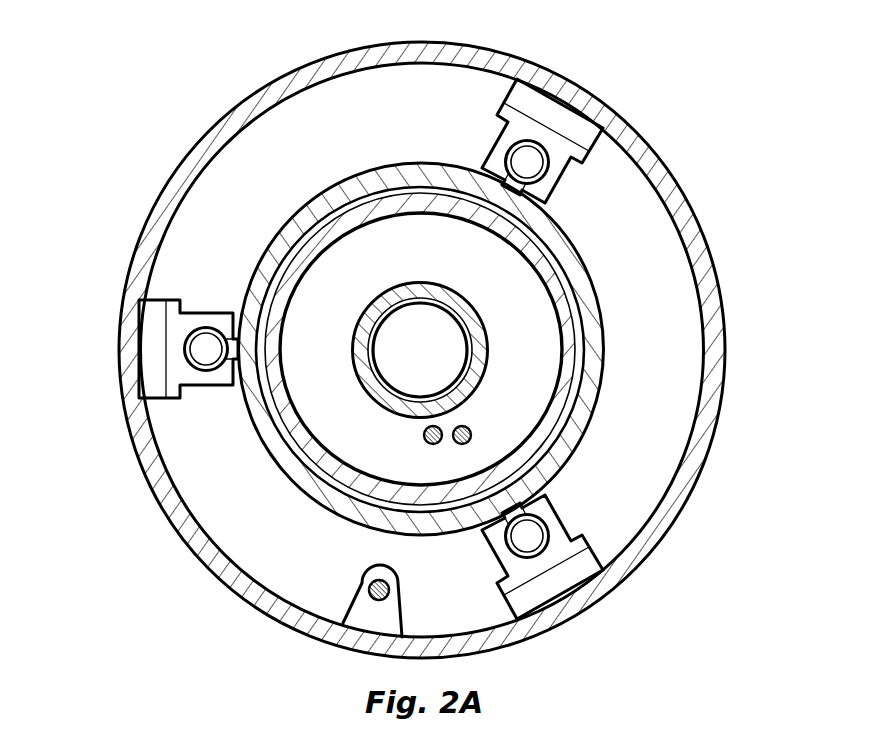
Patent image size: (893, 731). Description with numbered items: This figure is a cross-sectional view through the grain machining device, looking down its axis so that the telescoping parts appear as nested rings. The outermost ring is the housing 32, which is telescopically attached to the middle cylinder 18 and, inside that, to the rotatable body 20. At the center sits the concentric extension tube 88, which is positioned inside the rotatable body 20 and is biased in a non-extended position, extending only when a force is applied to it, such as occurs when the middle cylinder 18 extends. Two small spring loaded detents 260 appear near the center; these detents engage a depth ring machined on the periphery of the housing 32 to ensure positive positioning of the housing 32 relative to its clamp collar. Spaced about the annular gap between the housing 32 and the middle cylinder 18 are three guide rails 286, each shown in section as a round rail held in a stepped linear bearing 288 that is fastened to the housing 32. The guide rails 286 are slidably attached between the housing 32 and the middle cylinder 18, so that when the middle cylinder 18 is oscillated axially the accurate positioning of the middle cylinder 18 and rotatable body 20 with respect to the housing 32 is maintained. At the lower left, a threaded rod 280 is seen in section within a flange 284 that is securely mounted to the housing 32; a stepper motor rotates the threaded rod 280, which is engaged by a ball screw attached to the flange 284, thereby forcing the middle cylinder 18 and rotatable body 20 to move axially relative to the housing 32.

The housing 32 is at (684, 196).
The middle cylinder 18 is at (557, 470).
The rotatable body 20 is at (562, 350).
The concentric extension tube 88 is at (484, 320).
The spring loaded detents 260 is at (440, 447).
The linear bearings 288 is at (193, 313).
The guide rails 286 is at (200, 352).
The threaded rod 280 is at (363, 590).
The flange 284 is at (370, 581).